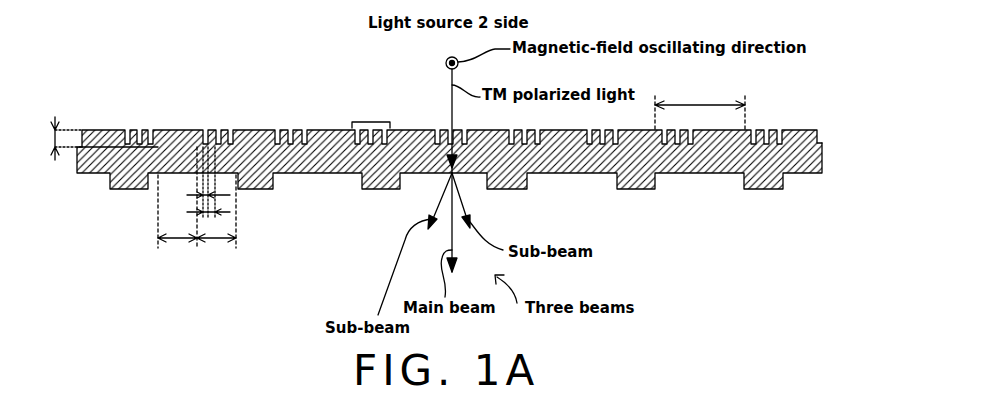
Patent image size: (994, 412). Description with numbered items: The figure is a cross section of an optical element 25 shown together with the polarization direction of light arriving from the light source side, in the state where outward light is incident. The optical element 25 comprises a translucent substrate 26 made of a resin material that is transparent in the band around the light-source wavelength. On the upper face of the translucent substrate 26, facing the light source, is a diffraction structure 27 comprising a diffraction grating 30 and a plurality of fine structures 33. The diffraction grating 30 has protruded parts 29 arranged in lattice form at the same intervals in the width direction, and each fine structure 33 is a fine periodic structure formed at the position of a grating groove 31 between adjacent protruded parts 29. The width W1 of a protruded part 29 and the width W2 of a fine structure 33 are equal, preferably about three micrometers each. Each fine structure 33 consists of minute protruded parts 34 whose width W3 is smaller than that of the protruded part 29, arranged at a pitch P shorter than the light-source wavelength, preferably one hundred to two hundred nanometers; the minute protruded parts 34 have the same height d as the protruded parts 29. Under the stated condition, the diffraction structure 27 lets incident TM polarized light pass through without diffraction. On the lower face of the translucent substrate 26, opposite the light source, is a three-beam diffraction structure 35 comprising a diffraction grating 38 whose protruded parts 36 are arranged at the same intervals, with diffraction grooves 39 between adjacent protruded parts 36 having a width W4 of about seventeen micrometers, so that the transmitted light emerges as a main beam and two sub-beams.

The optical element 25 is at (82, 108).
The translucent substrate 26 is at (77, 163).
The diffraction structure 27 is at (190, 63).
The protruded part 29 is at (180, 130).
The diffraction grating 30 is at (167, 130).
The grating groove 31 is at (238, 130).
The fine structure 33 is at (222, 129).
The minute protruded part 34 is at (230, 130).
The three-beam diffraction structure 35 is at (377, 210).
The protruded part 36 is at (390, 197).
The diffraction grating 38 is at (373, 196).
The diffraction groove 39 is at (417, 174).
The height d is at (55, 133).
The width size of protruded part W1 is at (182, 242).
The width size of fine structure W2 is at (216, 242).
The width size of minute protruded part W3 is at (216, 197).
The pitch P is at (215, 214).
The width size of diffraction groove W4 is at (700, 104).